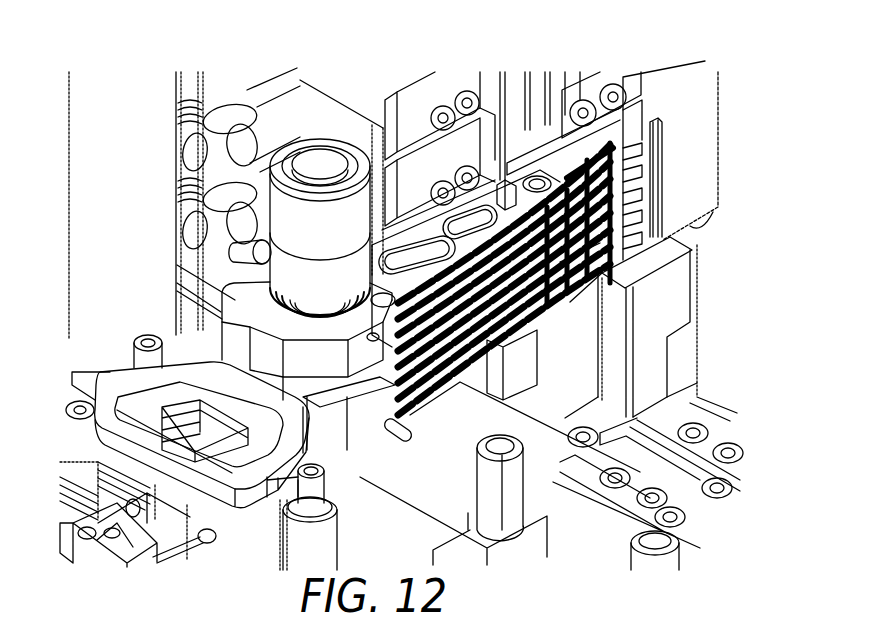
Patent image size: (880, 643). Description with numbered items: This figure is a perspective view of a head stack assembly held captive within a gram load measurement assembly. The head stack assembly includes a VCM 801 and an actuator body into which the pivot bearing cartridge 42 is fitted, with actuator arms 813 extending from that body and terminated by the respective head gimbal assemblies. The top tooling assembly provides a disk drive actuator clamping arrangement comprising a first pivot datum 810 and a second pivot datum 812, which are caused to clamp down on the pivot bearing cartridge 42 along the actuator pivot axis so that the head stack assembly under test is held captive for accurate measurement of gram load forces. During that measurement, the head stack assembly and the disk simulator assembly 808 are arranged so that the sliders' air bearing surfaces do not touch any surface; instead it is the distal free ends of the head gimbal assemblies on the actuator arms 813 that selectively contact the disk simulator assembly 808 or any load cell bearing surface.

The second pivot datum 812 is at (329, 170).
The pivot bearing cartridge 42 is at (276, 305).
The actuator arms 813 is at (457, 251).
The disk simulator assembly 808 is at (706, 122).
The VCM 801 is at (252, 506).
The first pivot datum 810 is at (356, 516).